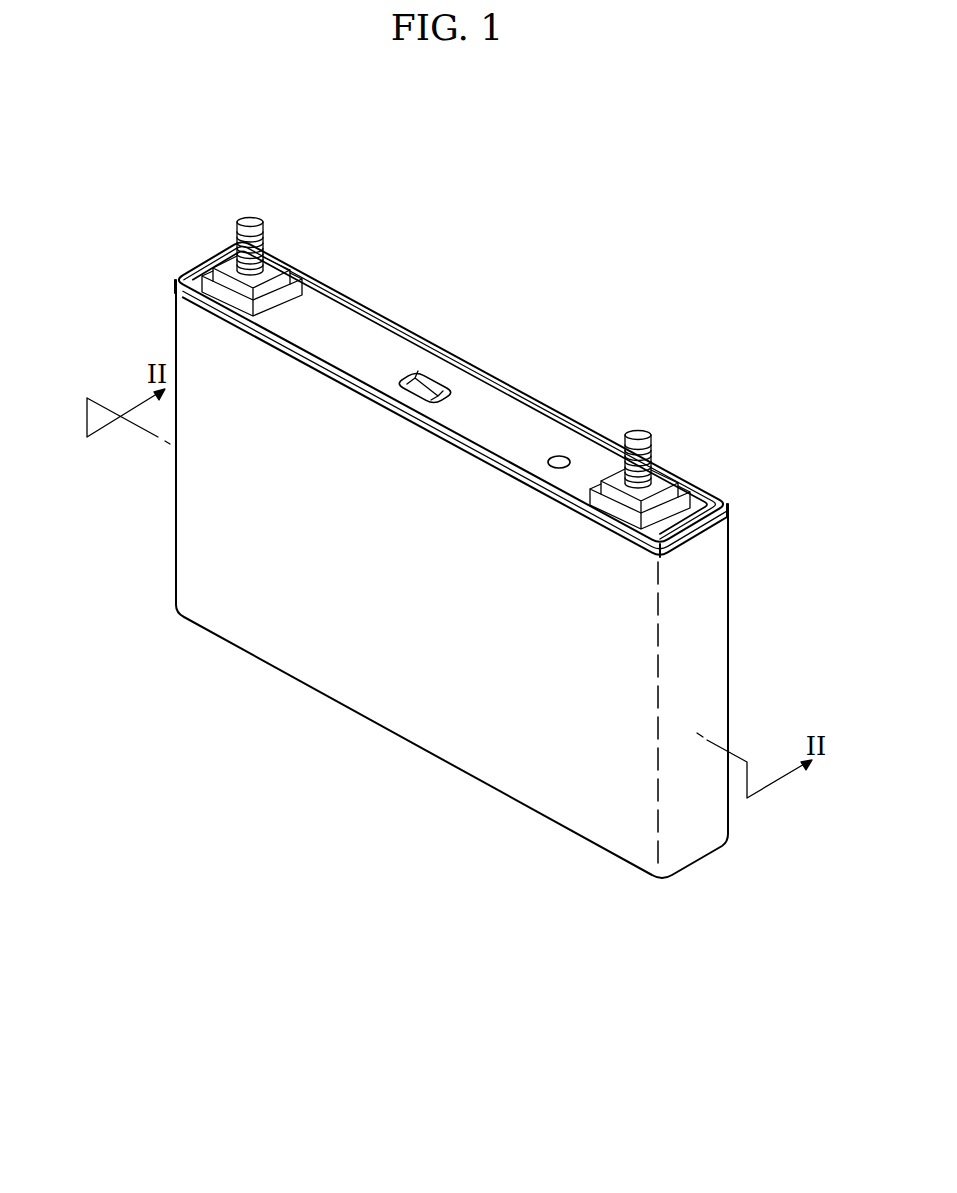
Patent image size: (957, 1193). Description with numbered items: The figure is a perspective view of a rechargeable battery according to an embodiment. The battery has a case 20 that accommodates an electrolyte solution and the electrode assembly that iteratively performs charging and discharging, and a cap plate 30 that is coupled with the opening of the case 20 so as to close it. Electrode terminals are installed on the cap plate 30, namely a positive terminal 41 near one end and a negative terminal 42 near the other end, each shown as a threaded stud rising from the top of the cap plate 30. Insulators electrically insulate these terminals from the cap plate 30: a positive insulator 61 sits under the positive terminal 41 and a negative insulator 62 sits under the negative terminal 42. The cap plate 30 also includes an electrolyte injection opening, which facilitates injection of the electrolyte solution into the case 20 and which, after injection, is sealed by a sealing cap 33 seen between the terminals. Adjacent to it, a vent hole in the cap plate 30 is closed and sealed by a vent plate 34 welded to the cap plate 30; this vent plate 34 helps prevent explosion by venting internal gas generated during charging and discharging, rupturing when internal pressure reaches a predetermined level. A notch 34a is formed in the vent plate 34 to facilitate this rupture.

The case 20 is at (368, 698).
The cap plate 30 is at (387, 348).
The sealing cap 33 is at (562, 456).
The vent plate 34 is at (460, 355).
The notch 34a is at (428, 381).
The positive terminal 41 is at (288, 246).
The negative terminal 42 is at (657, 447).
The positive insulator 61 is at (296, 272).
The negative insulator 62 is at (668, 508).